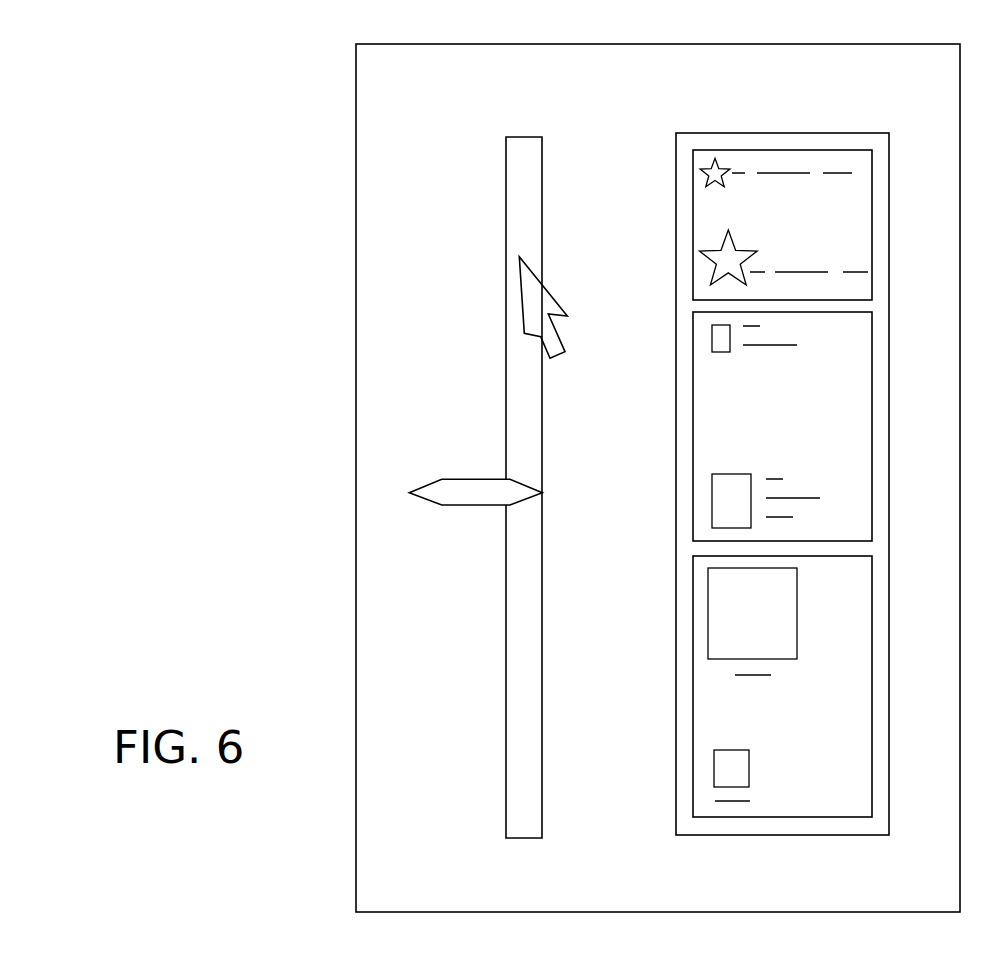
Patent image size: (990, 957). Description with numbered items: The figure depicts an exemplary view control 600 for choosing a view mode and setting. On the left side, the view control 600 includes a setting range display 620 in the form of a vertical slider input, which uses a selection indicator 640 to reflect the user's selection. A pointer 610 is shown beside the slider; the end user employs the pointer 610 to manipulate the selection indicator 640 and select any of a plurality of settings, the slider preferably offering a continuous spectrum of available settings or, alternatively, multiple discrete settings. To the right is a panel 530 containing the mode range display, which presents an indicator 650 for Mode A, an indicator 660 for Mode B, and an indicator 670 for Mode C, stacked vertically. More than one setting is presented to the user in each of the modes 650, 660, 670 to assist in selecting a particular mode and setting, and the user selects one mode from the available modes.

The view control 600 is at (268, 286).
The pointer 610 is at (556, 302).
The setting range display 620 is at (523, 137).
The selection indicator 640 is at (468, 507).
The panel 530 is at (877, 133).
The indicator for Mode A 650 is at (872, 225).
The indicator for Mode B 660 is at (872, 425).
The indicator for Mode C 670 is at (872, 685).